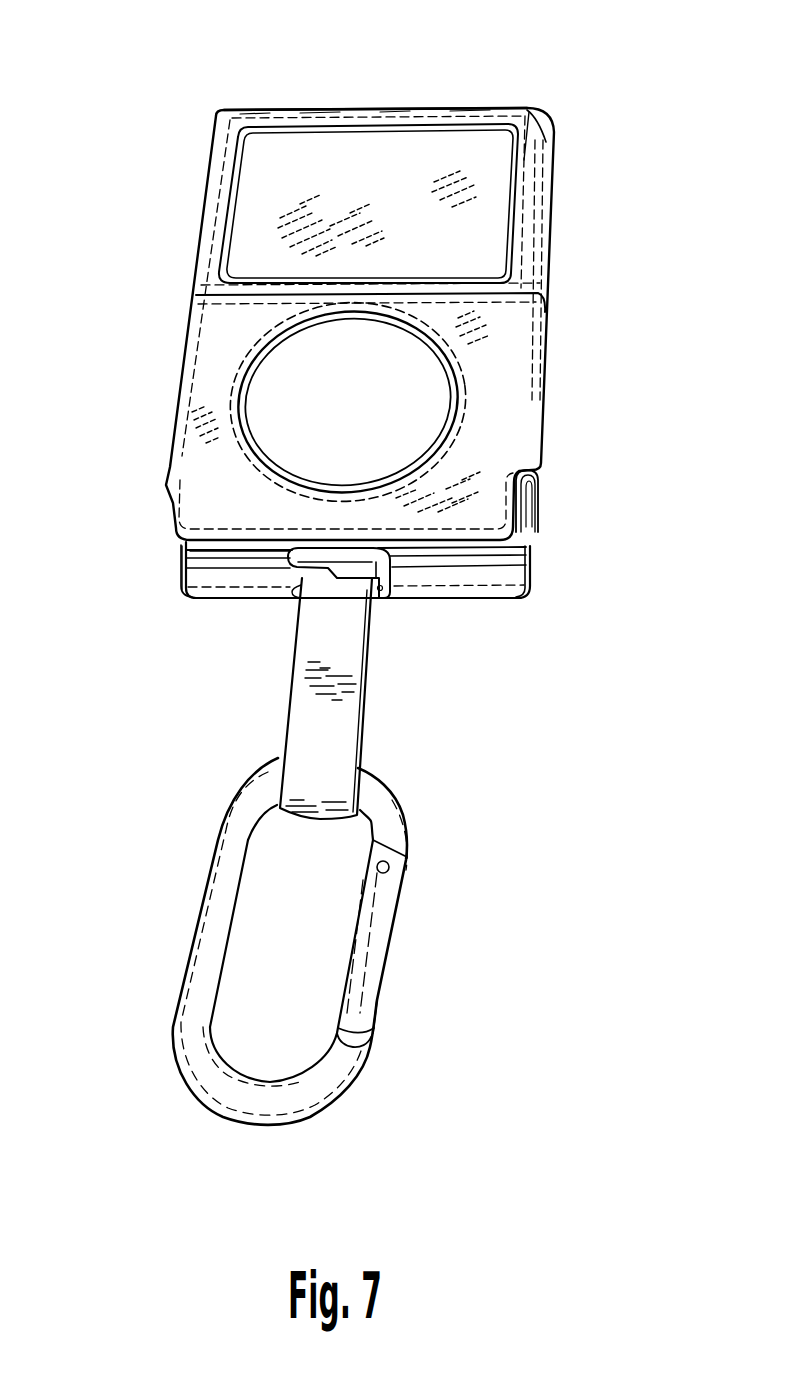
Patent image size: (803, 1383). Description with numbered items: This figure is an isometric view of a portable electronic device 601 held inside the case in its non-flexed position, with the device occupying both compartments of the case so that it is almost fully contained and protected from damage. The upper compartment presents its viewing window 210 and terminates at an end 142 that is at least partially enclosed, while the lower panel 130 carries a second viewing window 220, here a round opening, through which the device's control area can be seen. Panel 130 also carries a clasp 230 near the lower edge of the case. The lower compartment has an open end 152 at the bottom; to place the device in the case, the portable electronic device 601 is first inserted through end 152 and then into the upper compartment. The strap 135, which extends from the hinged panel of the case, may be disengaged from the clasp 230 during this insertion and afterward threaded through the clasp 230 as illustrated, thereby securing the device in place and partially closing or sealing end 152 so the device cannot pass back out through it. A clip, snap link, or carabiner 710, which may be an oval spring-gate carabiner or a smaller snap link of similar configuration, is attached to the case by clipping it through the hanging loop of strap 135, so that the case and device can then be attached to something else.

The panel 130 is at (502, 381).
The end 142 is at (527, 108).
The viewing window 210 is at (273, 185).
The viewing window 220 is at (273, 383).
The end 152 is at (250, 597).
The portable electronic device 601 is at (215, 565).
The clasp 230 is at (380, 600).
The strap 135 is at (365, 746).
The carabiner 710 is at (205, 904).